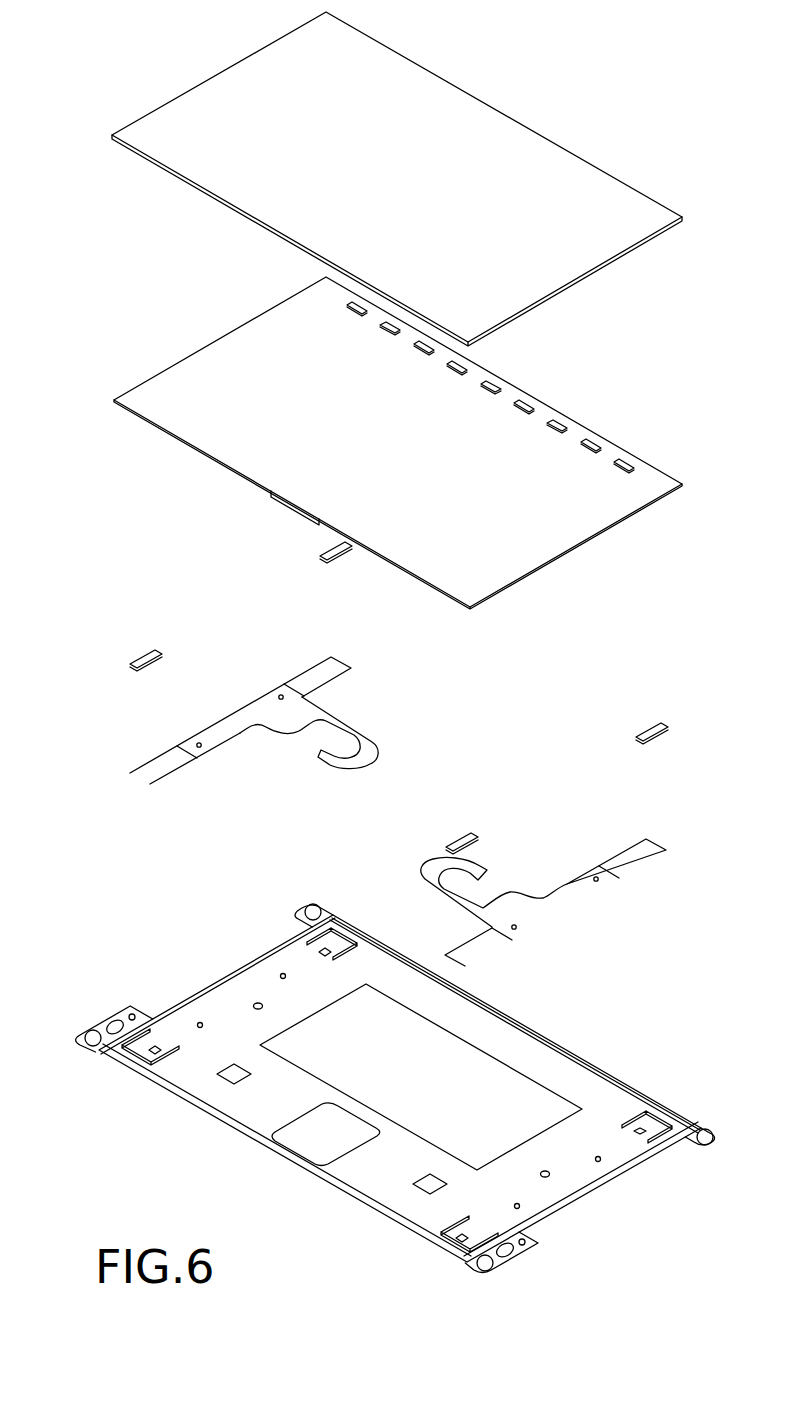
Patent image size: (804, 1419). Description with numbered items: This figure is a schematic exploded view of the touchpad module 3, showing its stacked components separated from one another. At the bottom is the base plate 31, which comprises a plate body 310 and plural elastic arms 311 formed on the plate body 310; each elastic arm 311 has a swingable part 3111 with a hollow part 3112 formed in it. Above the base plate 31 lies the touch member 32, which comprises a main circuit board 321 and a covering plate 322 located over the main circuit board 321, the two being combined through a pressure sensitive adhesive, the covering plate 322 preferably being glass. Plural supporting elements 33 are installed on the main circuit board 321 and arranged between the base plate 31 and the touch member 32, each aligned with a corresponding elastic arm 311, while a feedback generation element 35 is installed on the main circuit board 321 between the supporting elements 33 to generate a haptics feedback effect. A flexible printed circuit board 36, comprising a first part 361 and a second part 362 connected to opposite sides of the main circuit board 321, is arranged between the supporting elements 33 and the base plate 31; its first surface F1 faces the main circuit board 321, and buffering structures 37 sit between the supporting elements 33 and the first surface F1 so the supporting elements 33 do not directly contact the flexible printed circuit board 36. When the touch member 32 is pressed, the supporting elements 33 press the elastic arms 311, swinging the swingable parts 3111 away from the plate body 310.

The touchpad module 3 is at (590, 63).
The base plate 31 is at (124, 901).
The plate body 310 is at (611, 1044).
The elastic arm 311 is at (524, 1308).
The swingable part 3111 is at (445, 1248).
The hollow part 3112 is at (505, 1252).
The touch member 32 is at (703, 160).
The main circuit board 321 is at (607, 462).
The covering plate 322 is at (603, 202).
The supporting element 33 is at (324, 547).
The feedback generation element 35 is at (287, 511).
The flexible printed circuit board 36 is at (122, 503).
The first part 361 is at (612, 927).
The second part 362 is at (217, 733).
The buffering structure 37 is at (317, 677).
The first surface F1 is at (273, 705).